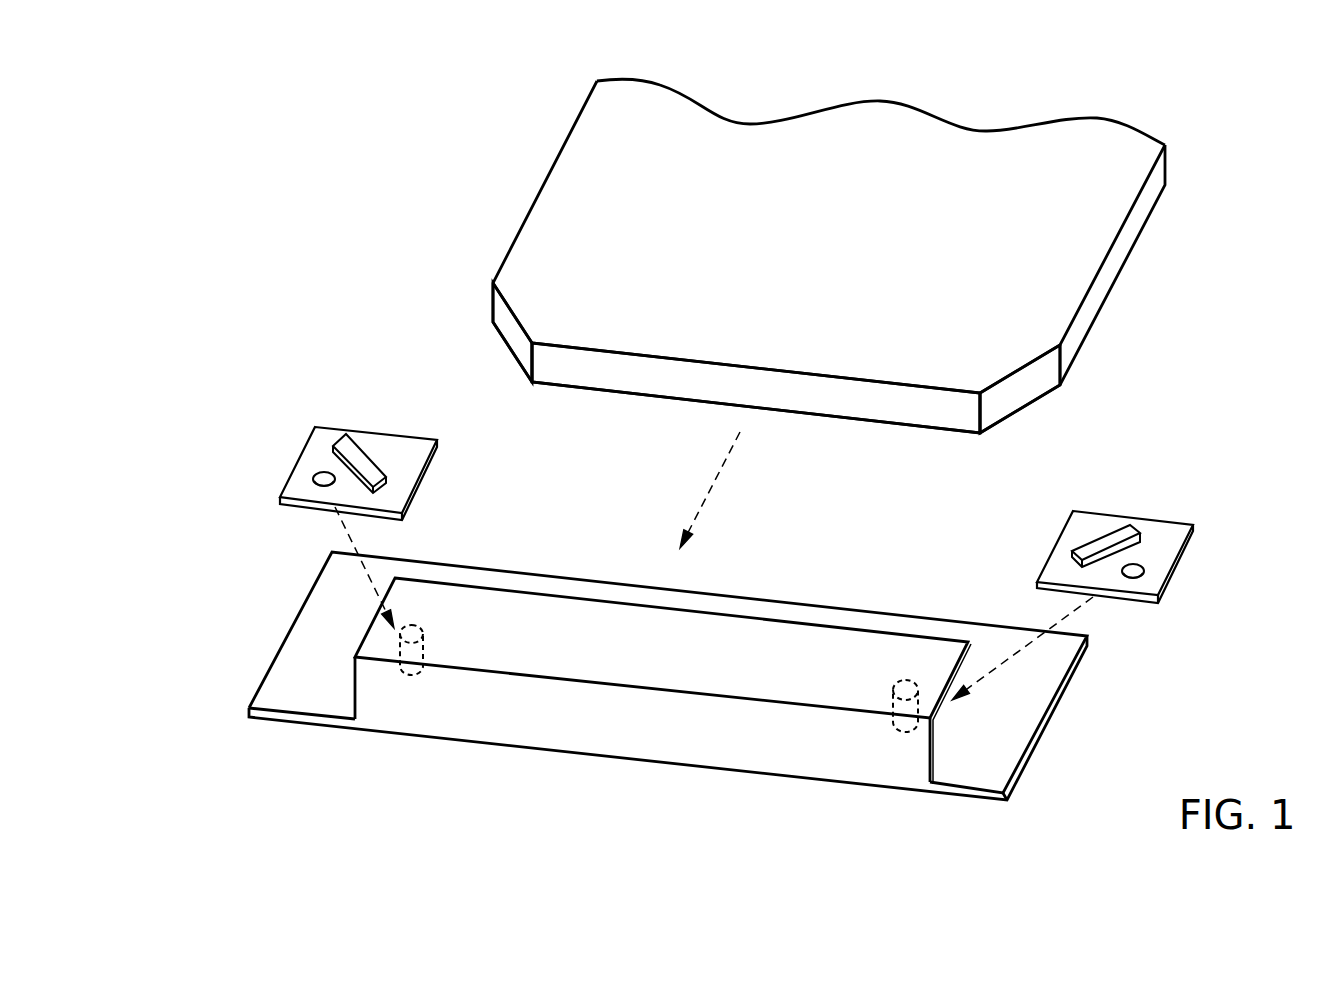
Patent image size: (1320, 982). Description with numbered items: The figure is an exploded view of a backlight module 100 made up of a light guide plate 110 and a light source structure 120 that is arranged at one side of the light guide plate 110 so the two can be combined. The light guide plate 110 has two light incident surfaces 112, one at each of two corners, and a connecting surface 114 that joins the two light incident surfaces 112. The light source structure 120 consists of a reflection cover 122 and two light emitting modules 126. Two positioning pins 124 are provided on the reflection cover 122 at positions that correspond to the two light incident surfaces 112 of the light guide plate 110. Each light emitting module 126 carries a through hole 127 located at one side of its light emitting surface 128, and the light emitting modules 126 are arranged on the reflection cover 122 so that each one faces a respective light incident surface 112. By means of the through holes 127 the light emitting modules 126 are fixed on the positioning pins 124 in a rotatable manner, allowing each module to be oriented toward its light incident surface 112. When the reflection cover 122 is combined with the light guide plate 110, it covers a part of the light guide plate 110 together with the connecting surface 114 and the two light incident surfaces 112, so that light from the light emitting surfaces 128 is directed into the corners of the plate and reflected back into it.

The backlight module 100 is at (345, 180).
The light guide plate 110 is at (527, 177).
The light incident surface 112 is at (513, 333).
The connecting surface 114 is at (648, 376).
The light source structure 120 is at (265, 610).
The reflection cover 122 is at (1037, 703).
The positioning pin 124 is at (421, 676).
The light emitting module 126 is at (315, 412).
The through hole 127 is at (317, 473).
The light emitting surface 128 is at (373, 452).